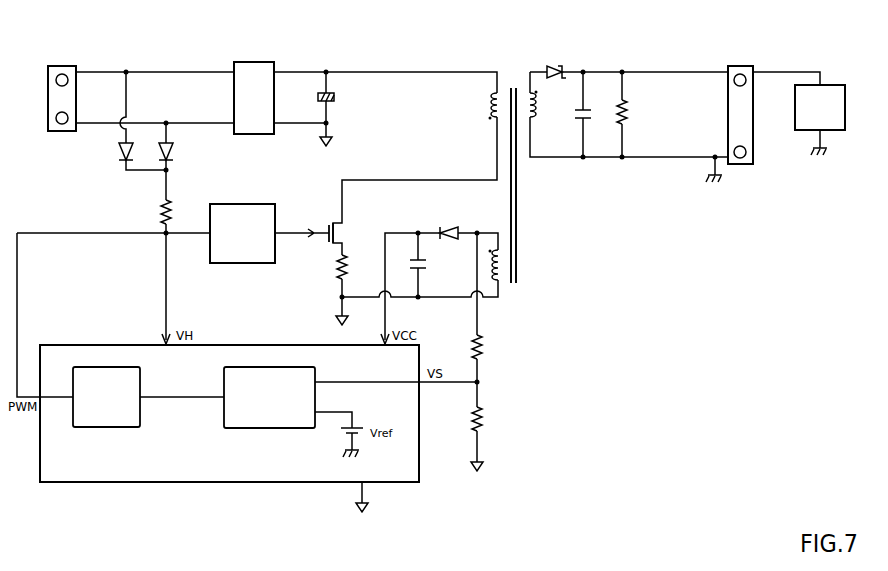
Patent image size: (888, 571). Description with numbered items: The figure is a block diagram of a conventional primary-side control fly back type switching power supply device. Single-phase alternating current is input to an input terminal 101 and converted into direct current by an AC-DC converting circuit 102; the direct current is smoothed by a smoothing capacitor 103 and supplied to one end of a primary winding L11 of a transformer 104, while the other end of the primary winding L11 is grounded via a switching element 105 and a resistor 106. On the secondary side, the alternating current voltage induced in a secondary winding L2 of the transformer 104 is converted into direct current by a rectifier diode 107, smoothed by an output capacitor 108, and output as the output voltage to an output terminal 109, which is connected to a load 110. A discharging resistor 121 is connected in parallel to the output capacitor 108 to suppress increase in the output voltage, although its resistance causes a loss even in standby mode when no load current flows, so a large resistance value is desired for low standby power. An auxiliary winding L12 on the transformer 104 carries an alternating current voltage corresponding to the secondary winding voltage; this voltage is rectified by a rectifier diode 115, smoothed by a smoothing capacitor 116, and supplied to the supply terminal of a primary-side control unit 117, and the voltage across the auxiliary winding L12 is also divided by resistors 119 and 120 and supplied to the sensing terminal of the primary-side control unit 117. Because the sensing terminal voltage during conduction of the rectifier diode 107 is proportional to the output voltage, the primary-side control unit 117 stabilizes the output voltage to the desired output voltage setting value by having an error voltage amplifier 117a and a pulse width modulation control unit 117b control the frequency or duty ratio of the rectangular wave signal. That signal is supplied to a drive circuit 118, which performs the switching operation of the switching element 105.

The input terminal 101 is at (62, 65).
The AC-DC converting circuit 102 is at (252, 62).
The smoothing capacitor 103 is at (334, 96).
The transformer 104 is at (515, 77).
The switching element 105 is at (330, 230).
The resistor 106 is at (336, 268).
The rectifier diode 107 is at (552, 65).
The output capacitor 108 is at (589, 109).
The output terminal 109 is at (742, 65).
The load 110 is at (836, 84).
The rectifier diode 115 is at (450, 226).
The smoothing capacitor 116 is at (425, 270).
The primary-side control unit 117 is at (92, 344).
The error voltage amplifier 117a is at (275, 429).
The PWM control unit 117b is at (141, 418).
The drive circuit 118 is at (252, 203).
The resistor 119 is at (488, 345).
The resistor 120 is at (488, 413).
The discharging resistor 121 is at (630, 115).
The primary winding L11 is at (490, 100).
The auxiliary winding L12 is at (505, 256).
The secondary winding L2 is at (537, 110).